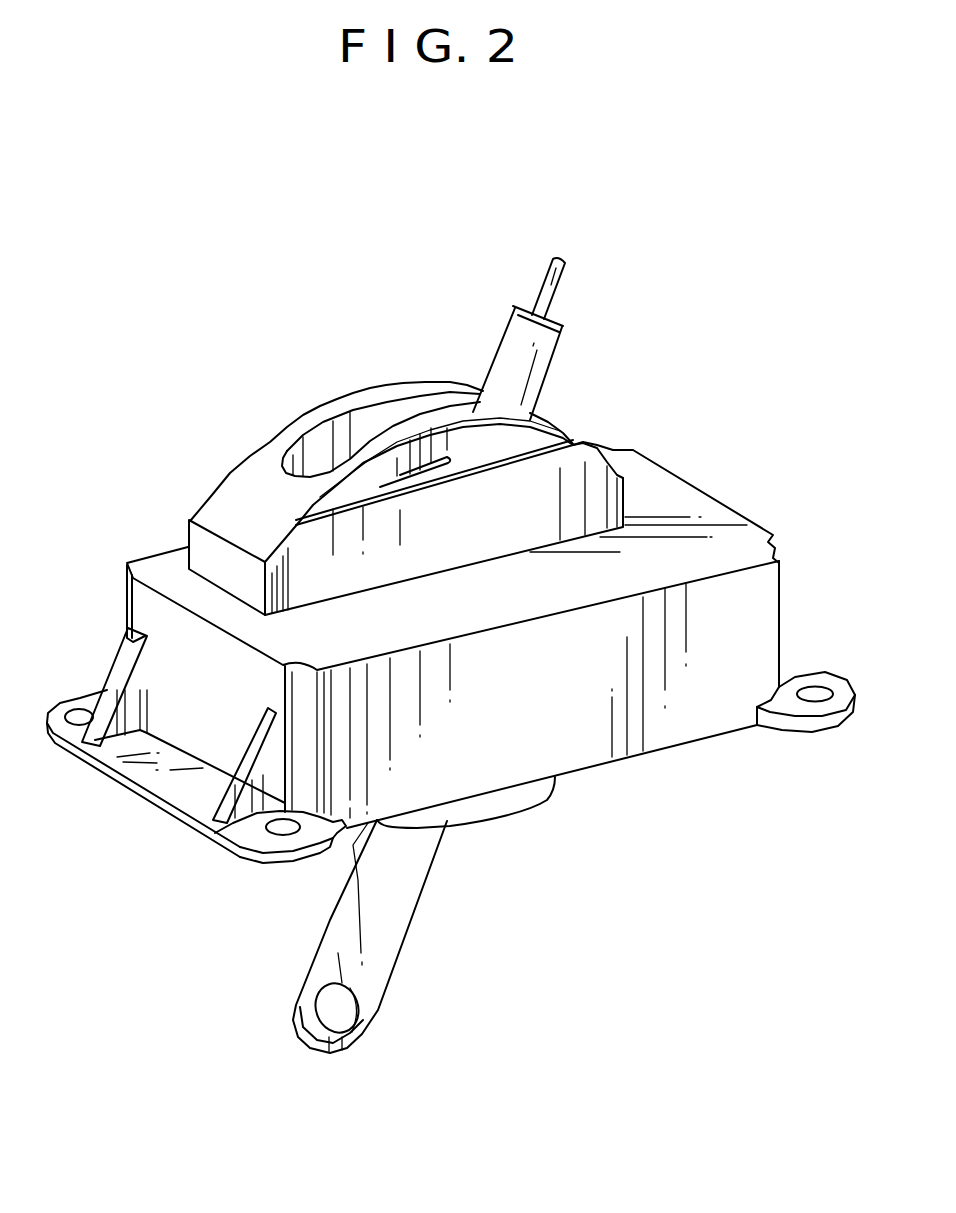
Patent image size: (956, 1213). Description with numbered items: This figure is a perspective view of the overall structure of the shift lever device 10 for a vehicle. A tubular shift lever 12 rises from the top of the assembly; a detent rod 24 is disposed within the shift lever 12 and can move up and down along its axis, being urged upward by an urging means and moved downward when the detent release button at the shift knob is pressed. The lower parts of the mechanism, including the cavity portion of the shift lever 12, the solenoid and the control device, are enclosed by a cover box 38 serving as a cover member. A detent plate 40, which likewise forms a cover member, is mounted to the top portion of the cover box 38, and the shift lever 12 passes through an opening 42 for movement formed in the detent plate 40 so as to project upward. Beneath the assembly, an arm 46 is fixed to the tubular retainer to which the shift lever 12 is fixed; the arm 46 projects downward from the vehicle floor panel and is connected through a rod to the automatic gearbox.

The shift lever device 10 is at (247, 327).
The shift lever 12 is at (513, 348).
The detent rod 24 is at (548, 285).
The cover box 38 is at (662, 482).
The detent plate 40 is at (245, 500).
The opening for movement 42 is at (401, 414).
The arm 46 is at (418, 911).